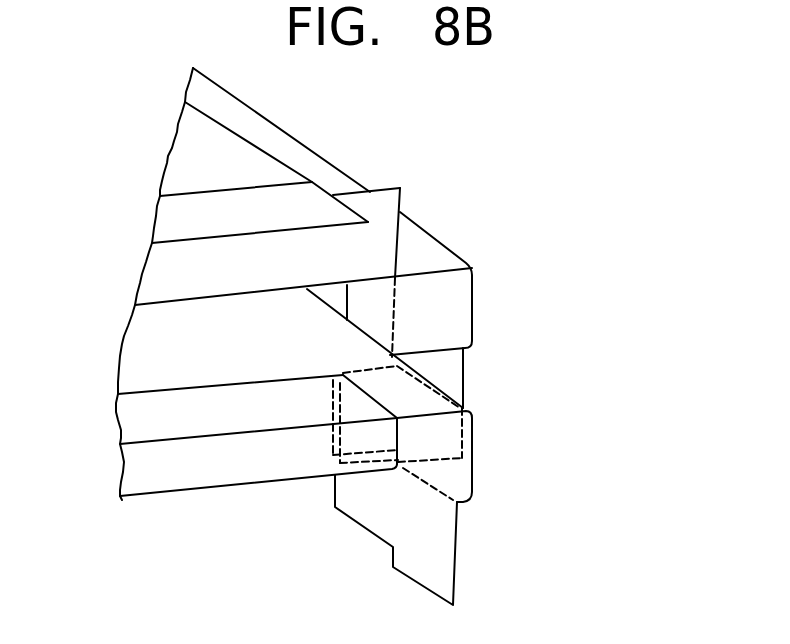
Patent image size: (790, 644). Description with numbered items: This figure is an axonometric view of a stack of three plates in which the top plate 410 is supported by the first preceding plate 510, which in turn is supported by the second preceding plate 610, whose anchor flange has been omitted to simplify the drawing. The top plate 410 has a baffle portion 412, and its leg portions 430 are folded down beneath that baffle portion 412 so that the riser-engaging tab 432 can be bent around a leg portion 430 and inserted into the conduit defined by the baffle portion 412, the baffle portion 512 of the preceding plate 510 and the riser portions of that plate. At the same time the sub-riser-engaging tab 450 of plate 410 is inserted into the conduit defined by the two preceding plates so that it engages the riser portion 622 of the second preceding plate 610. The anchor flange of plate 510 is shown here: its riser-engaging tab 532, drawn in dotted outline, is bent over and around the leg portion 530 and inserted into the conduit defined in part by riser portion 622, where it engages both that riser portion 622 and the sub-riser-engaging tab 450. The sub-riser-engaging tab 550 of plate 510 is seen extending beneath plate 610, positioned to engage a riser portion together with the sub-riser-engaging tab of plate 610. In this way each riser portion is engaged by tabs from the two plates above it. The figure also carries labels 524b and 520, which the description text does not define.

The plate 410 is at (178, 172).
The baffle portion 412 is at (240, 169).
The flange edge 524b is at (312, 178).
The first preceding plate 510 is at (138, 361).
The baffle portion 512 is at (257, 342).
The plate 610 is at (140, 516).
The riser portion 622 is at (255, 458).
The leg portion 430 is at (453, 368).
The riser-engaging tab 432 is at (443, 315).
The riser-engaging tab 532 is at (453, 477).
The clamp assembly 520 is at (492, 533).
The leg portion 530 is at (432, 533).
The sub-riser-engaging tab 550 is at (373, 500).
The sub-riser-engaging tab 450 is at (328, 402).